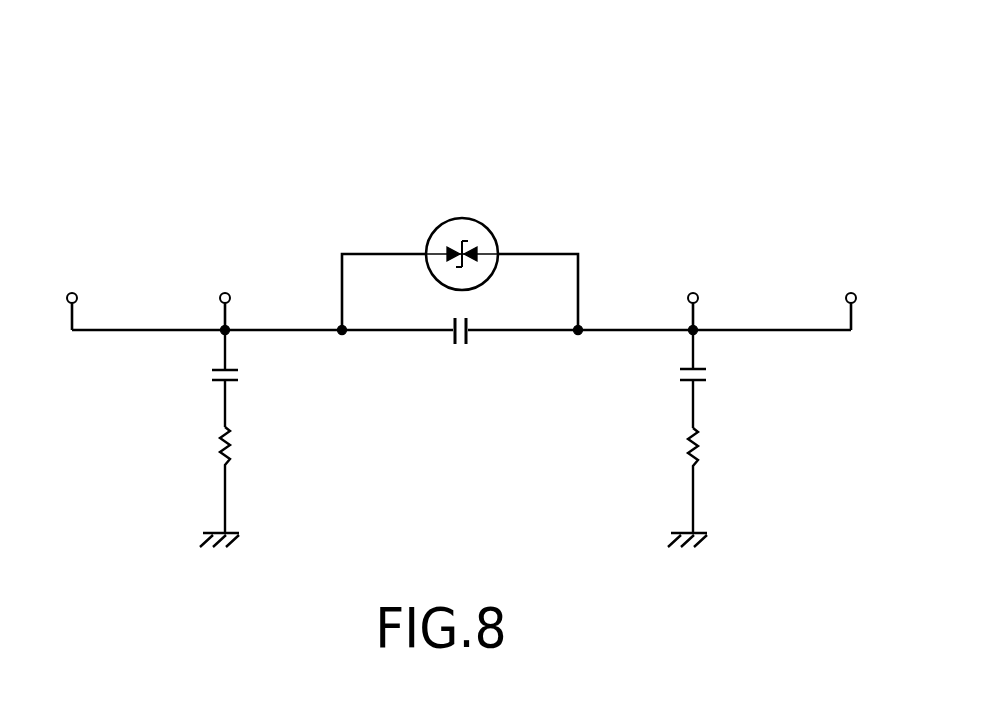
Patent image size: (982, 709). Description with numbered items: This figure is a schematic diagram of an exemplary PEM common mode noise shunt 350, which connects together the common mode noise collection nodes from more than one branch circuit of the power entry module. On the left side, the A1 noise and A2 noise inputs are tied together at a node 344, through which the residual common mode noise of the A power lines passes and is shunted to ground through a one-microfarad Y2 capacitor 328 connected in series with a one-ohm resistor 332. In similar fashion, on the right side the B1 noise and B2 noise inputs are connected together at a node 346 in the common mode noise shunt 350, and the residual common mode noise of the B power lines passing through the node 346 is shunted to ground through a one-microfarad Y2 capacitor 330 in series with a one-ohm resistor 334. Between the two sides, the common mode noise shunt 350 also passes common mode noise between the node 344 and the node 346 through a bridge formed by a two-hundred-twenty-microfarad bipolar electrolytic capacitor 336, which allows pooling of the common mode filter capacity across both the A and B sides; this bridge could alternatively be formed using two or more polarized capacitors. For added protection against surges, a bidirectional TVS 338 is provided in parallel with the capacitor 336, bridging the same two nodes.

The Y2 capacitor 328 is at (212, 402).
The Y2 capacitor 330 is at (710, 394).
The resistor 332 is at (212, 470).
The resistor 334 is at (710, 460).
The bipolar electrolytic capacitor 336 is at (428, 348).
The bidirectional TVS 338 is at (422, 216).
The node 344 is at (152, 292).
The node 346 is at (634, 356).
The PEM common mode noise shunt 350 is at (752, 120).